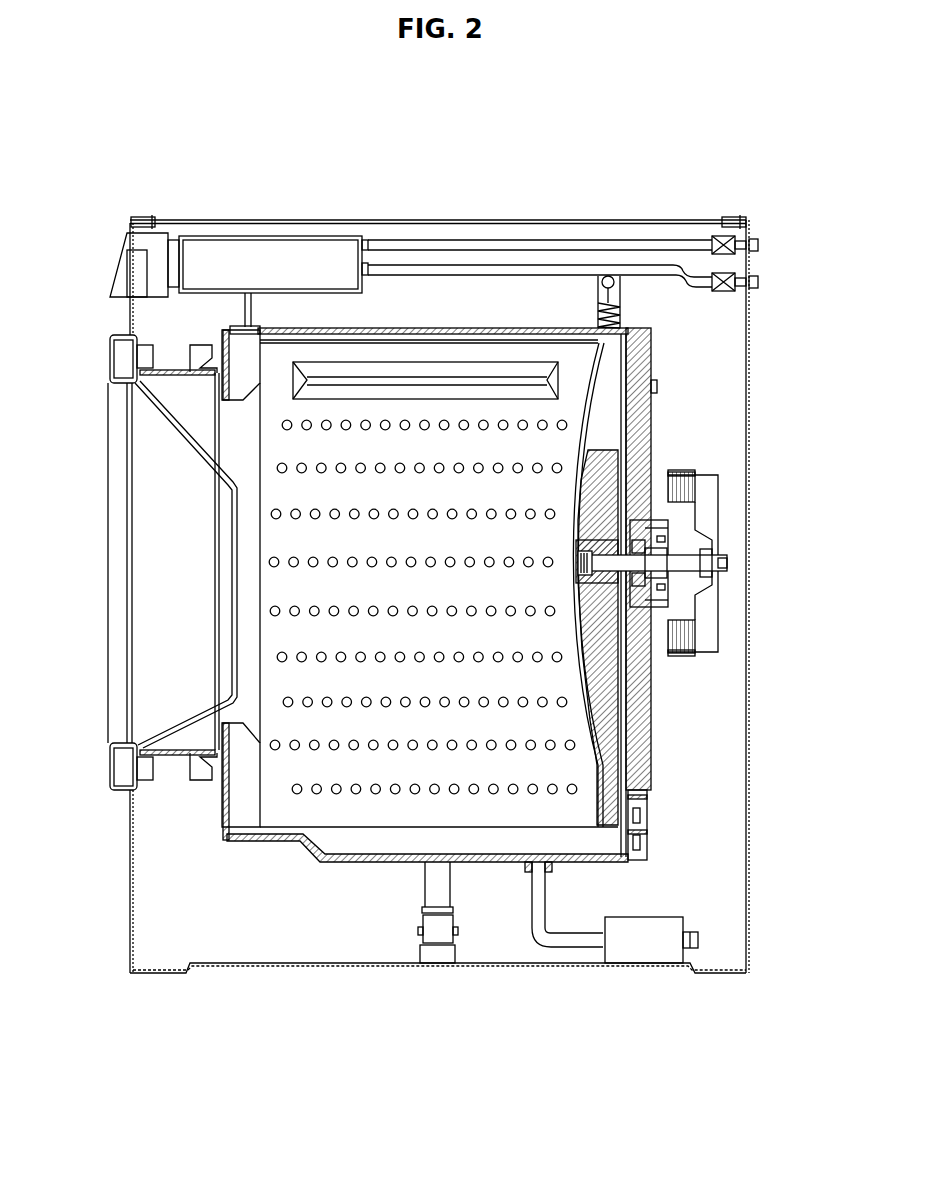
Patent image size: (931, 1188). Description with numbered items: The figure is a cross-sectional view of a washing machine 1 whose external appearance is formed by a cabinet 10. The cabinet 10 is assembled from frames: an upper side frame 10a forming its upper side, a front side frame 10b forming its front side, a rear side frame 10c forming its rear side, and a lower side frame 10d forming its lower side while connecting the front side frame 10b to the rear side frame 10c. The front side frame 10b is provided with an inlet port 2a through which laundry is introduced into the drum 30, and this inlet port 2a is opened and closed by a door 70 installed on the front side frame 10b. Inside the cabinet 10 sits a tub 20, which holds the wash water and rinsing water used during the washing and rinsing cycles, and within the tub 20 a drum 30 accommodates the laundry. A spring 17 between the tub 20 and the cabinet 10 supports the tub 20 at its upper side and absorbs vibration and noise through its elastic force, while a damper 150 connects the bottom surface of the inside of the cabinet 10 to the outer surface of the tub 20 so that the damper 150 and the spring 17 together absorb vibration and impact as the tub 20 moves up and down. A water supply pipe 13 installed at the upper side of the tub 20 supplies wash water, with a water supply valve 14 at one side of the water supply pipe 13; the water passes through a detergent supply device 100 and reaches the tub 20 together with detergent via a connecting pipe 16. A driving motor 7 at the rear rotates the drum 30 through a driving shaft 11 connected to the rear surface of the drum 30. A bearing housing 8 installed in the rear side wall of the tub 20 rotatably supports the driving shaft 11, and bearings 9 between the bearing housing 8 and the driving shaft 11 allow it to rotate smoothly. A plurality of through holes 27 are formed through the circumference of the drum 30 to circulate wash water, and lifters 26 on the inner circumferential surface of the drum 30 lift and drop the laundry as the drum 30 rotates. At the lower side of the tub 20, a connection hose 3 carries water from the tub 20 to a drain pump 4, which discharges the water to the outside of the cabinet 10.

The washing machine 1 is at (391, 117).
The cabinet 10 is at (454, 579).
The upper side frame 10a is at (470, 221).
The front side frame 10b is at (130, 313).
The rear side frame 10c is at (749, 683).
The lower side frame 10d is at (347, 975).
The detergent supply device 100 is at (237, 248).
The connecting pipe 16 is at (248, 305).
The water supply pipe 13 is at (436, 270).
The water supply valve 14 is at (752, 275).
The spring 17 is at (594, 300).
The tub 20 is at (374, 329).
The drum 30 is at (513, 556).
The lifter 26 is at (549, 379).
The through hole 27 is at (566, 428).
The inlet port 2a is at (125, 380).
The door 70 is at (108, 565).
The driving motor 7 is at (687, 563).
The bearing housing 8 is at (670, 533).
The bearing 9 is at (719, 557).
The driving shaft 11 is at (663, 567).
The damper 150 is at (428, 886).
The connection hose 3 is at (533, 882).
The drain pump 4 is at (646, 942).